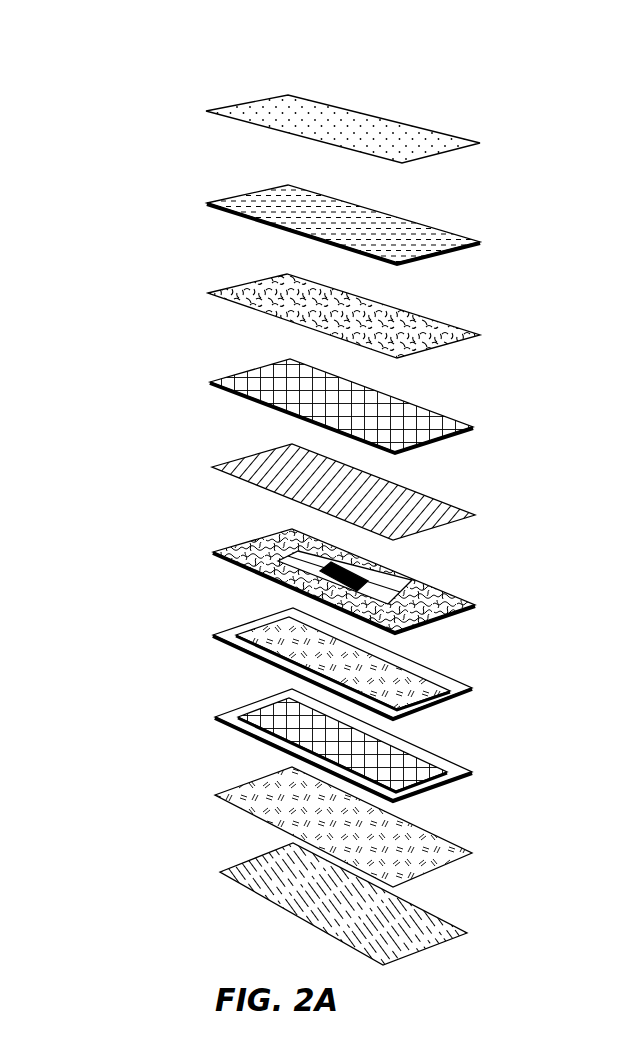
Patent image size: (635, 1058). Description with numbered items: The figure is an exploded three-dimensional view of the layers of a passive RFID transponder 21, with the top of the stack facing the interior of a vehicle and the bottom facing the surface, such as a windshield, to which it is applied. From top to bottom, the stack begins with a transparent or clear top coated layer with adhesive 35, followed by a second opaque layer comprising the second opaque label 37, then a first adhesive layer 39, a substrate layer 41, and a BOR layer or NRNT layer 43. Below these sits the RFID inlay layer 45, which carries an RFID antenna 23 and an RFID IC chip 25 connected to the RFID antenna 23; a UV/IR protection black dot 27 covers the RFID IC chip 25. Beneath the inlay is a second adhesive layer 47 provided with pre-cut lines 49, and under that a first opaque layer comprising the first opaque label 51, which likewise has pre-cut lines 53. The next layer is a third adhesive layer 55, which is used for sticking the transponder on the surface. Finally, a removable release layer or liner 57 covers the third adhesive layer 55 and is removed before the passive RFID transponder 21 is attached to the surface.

The passive RFID transponder 21 is at (529, 257).
The RFID antenna 23 is at (406, 582).
The RFID IC chip 25 is at (365, 557).
The UV/IR protection black dot 27 is at (370, 570).
The transparent or clear top coated layer with adhesive 35 is at (263, 113).
The second opaque label 37 is at (290, 208).
The first adhesive layer 39 is at (262, 296).
The substrate layer 41 is at (263, 384).
The BOR layer or NRNT layer 43 is at (262, 469).
The RFID inlay layer 45 is at (333, 576).
The second adhesive layer 47 is at (325, 663).
The pre-cut lines 49 is at (397, 662).
The first opaque label 51 is at (325, 745).
The pre-cut lines 53 is at (399, 745).
The third adhesive layer 55 is at (287, 810).
The removable release layer or liner 57 is at (290, 876).